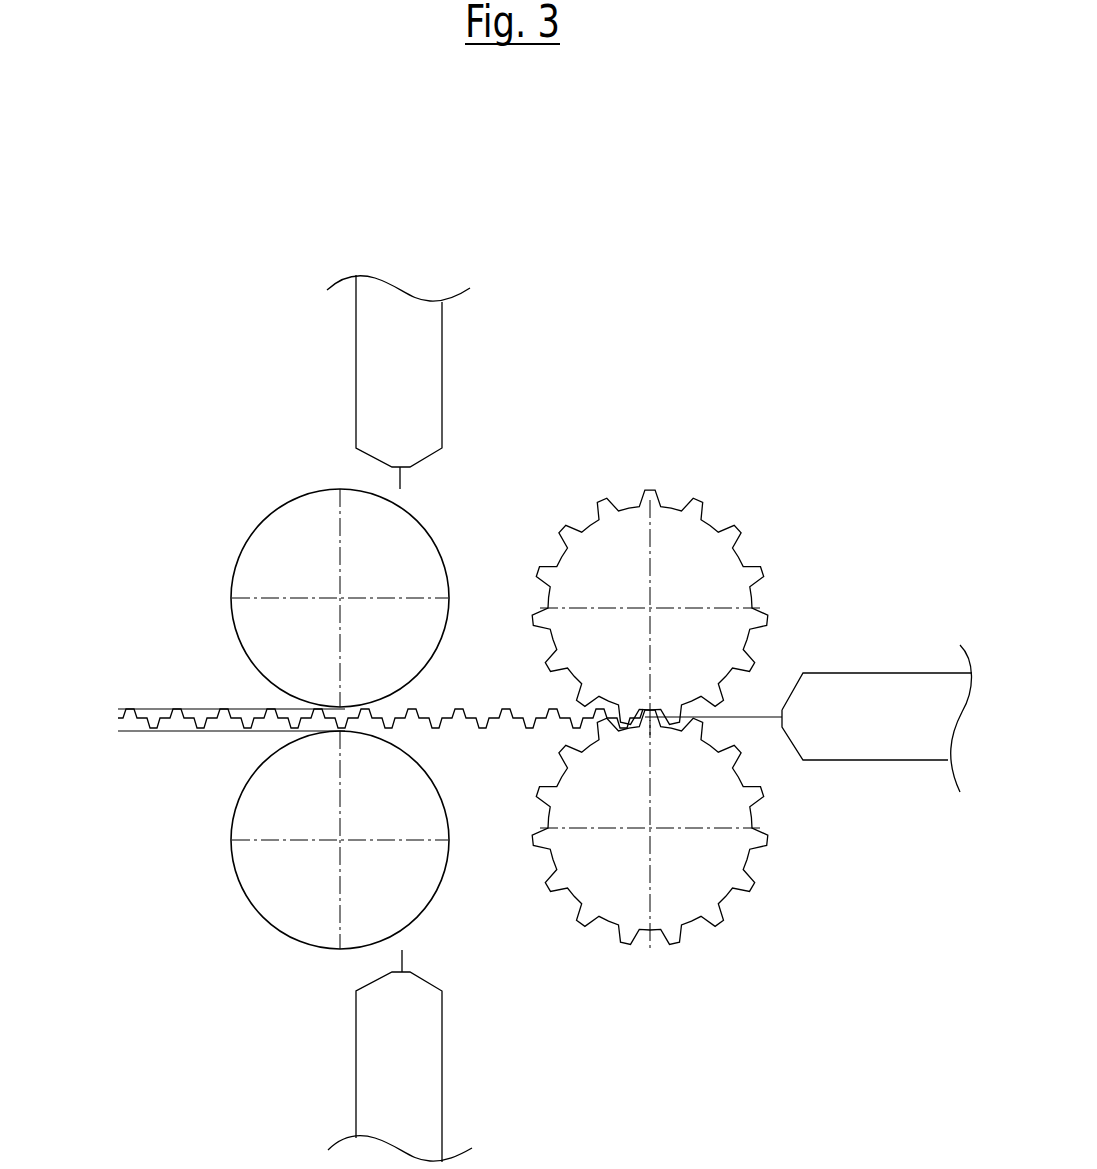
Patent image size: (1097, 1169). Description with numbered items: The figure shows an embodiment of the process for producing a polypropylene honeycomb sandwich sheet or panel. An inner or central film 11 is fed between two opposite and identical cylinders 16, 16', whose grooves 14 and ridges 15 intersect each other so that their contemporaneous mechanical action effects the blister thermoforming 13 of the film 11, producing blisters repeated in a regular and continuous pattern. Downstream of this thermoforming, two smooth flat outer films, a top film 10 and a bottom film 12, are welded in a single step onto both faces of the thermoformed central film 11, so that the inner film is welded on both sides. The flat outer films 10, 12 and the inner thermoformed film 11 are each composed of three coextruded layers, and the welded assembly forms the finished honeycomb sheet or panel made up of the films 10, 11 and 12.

The flat outer film 10 is at (162, 710).
The inner or central film 11 is at (118, 720).
The flat outer film 12 is at (142, 732).
The blister thermoforming 13 is at (247, 717).
The grooves 14 is at (712, 523).
The ridges 15 is at (763, 570).
The cylinder 16 is at (650, 612).
The cylinder 16' is at (650, 830).